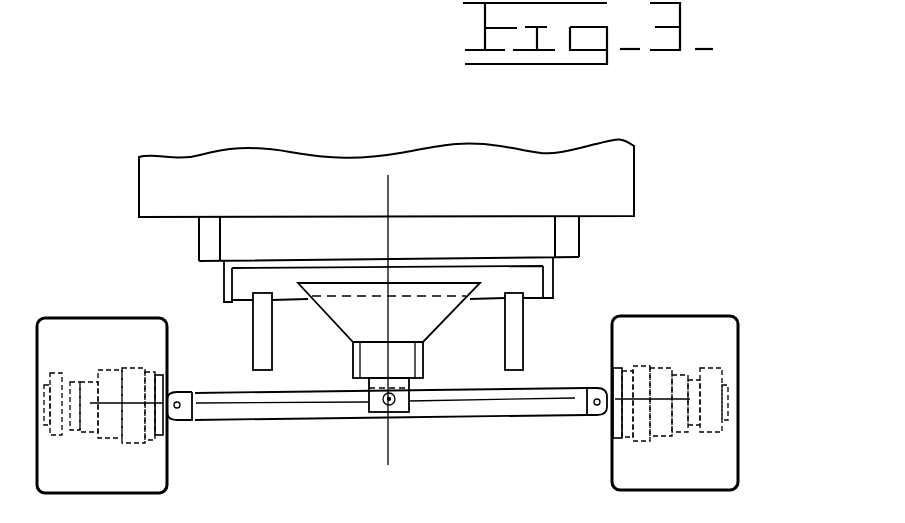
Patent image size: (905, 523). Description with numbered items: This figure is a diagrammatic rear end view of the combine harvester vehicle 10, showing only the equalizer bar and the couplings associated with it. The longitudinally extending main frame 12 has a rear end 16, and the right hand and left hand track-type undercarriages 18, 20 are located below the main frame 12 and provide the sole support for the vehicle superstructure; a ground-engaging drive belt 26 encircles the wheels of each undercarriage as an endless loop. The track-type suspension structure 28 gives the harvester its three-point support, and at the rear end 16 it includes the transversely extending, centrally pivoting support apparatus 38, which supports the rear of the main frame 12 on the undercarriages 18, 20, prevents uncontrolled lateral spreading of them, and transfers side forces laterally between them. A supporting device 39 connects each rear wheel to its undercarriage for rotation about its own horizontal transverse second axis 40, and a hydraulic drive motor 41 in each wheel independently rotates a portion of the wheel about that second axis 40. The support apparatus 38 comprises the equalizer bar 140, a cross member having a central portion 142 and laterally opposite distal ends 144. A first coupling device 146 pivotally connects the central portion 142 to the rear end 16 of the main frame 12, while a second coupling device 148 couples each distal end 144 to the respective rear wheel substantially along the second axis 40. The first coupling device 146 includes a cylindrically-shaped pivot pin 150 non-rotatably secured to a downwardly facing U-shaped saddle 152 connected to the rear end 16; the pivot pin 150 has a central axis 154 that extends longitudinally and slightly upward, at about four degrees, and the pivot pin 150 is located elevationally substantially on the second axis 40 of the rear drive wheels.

The combine harvester vehicle 10 is at (241, 132).
The main frame 12 is at (586, 232).
The rear end 16 is at (199, 233).
The right hand track-type undercarriage 18 is at (704, 304).
The left hand track-type undercarriage 20 is at (106, 304).
The drive belt 26 is at (130, 317).
The track-type suspension structure 28 is at (633, 259).
The pivoting support apparatus 38 is at (300, 443).
The supporting device 39 is at (119, 449).
The second axis 40 is at (288, 403).
The hydraulic drive motor 41 is at (136, 358).
The equalizer bar 140 is at (499, 434).
The central portion 142 is at (362, 410).
The distal ends 144 is at (203, 410).
The first coupling device 146 is at (386, 432).
The second coupling device 148 is at (174, 382).
The pivot pin 150 is at (372, 396).
The saddle 152 is at (398, 378).
The central axis 154 is at (396, 406).